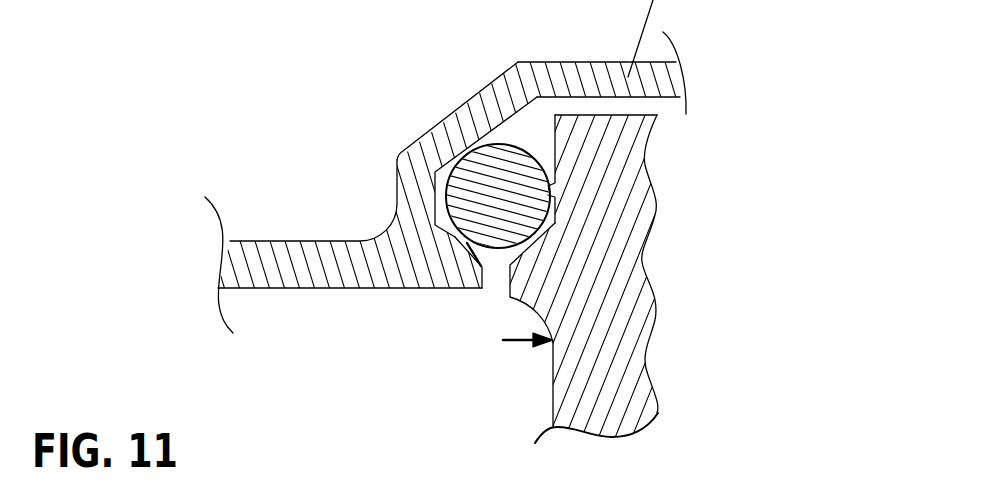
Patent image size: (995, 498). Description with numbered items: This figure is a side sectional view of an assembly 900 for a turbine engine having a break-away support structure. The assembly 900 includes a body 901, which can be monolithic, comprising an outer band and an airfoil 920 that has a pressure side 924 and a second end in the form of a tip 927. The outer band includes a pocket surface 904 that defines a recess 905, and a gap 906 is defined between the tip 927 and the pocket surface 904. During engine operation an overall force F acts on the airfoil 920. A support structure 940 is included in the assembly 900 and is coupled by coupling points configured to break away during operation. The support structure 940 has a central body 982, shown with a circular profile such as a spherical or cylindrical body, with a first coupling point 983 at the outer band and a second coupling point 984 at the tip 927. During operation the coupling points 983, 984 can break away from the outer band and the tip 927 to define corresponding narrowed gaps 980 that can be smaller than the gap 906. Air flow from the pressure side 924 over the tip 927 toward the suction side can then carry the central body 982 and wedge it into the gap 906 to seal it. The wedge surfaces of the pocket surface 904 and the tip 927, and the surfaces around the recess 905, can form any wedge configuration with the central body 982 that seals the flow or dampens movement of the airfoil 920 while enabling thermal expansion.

The assembly 900 is at (786, 64).
The body 901 is at (250, 232).
The pocket surface 904 is at (585, 95).
The recess 905 is at (494, 300).
The gap 906 is at (532, 127).
The airfoil 920 is at (610, 432).
The pressure side 924 is at (552, 397).
The tip 927 is at (620, 297).
The support structure 940 is at (478, 185).
The narrowed gaps 980 is at (458, 240).
The central body 982 is at (478, 185).
The first coupling point 983 is at (450, 236).
The second coupling point 984 is at (560, 182).